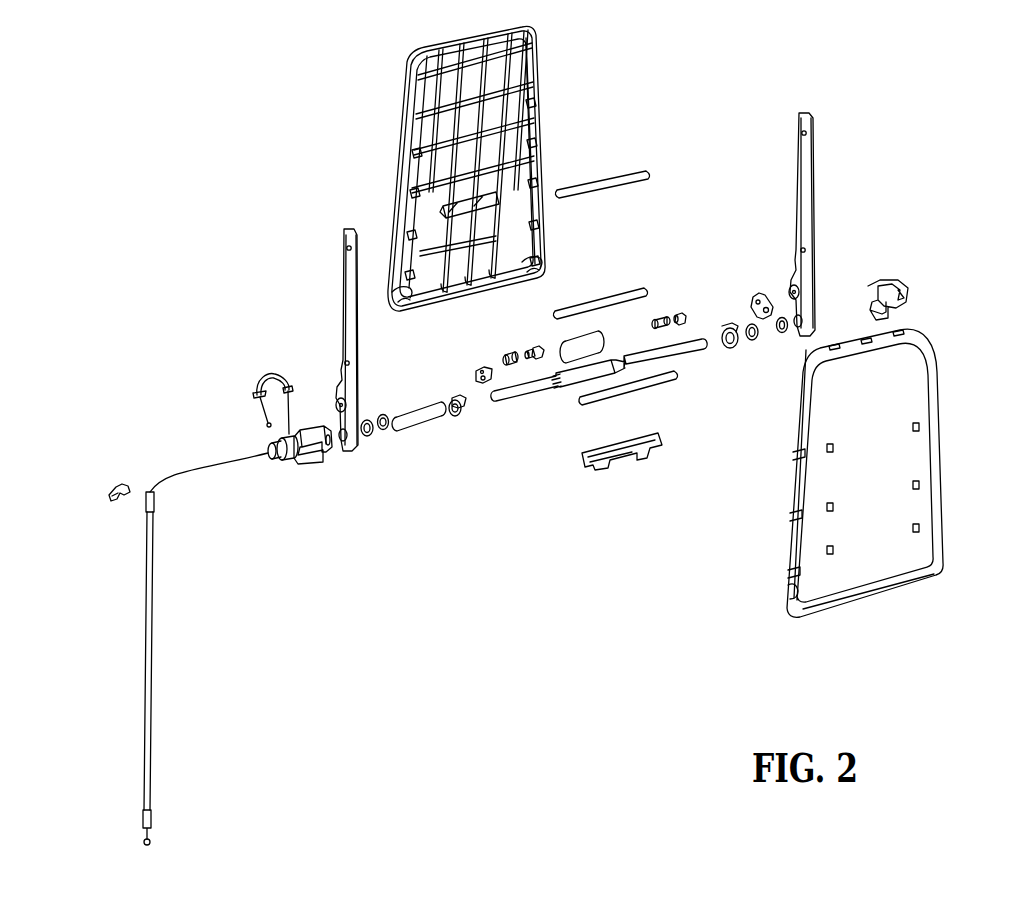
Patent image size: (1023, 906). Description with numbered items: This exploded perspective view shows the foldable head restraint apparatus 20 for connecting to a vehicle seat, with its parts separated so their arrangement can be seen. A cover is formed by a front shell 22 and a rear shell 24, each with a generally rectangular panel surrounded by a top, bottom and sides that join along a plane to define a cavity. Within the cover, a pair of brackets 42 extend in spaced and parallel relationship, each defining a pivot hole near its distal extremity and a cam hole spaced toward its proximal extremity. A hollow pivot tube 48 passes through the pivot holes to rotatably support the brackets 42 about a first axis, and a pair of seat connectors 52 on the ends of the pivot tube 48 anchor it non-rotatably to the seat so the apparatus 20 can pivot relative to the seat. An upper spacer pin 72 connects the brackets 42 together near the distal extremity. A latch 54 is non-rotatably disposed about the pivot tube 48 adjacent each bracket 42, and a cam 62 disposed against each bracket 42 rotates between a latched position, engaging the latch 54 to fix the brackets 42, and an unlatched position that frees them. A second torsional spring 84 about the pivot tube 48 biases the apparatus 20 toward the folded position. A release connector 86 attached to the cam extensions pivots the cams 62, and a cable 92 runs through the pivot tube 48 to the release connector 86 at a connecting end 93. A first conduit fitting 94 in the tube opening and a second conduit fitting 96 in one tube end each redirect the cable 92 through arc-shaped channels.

The foldable head restraint apparatus 20 is at (686, 130).
The front shell 22 is at (940, 393).
The rear shell 24 is at (384, 154).
The bracket 42 is at (805, 170).
The pivot tube 48 is at (689, 356).
The seat connector 52 is at (934, 308).
The latch 54 is at (722, 328).
The cam 62 is at (756, 295).
The upper spacer pin 72 is at (601, 178).
The second torsional spring 84 is at (572, 345).
The release connector 86 is at (600, 468).
The cable 92 is at (132, 641).
The connecting end 93 is at (251, 421).
The first conduit fitting 94 is at (278, 462).
The second conduit fitting 96 is at (117, 488).